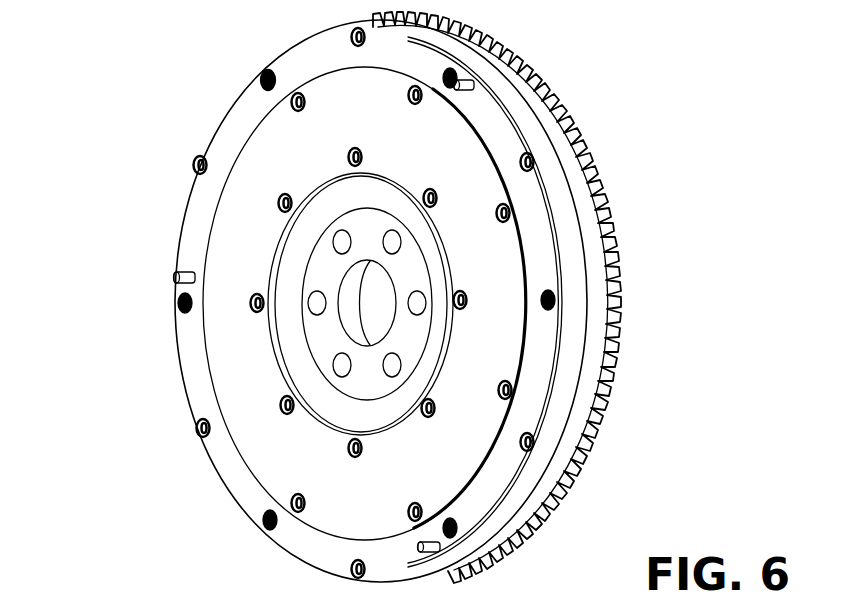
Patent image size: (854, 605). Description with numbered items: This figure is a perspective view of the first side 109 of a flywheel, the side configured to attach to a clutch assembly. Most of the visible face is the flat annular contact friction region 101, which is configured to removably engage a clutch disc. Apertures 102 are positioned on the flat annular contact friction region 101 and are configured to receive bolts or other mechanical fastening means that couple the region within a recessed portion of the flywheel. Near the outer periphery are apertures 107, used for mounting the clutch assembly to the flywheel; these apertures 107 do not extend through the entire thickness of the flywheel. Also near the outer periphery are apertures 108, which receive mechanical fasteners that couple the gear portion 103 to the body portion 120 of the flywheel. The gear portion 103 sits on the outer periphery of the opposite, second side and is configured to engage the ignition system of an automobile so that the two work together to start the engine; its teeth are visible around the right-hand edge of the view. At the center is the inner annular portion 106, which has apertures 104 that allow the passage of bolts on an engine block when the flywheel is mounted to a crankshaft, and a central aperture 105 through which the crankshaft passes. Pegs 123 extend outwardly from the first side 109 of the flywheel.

The flat annular contact friction region 101 is at (476, 225).
The apertures 102 is at (472, 297).
The gear portion 103 is at (628, 300).
The apertures 104 is at (402, 366).
The central aperture 105 is at (390, 307).
The inner annular portion 106 is at (320, 270).
The apertures 107 is at (194, 160).
The apertures 108 is at (266, 71).
The first side 109 is at (481, 125).
The body portion 120 is at (534, 473).
The pegs 123 is at (168, 277).